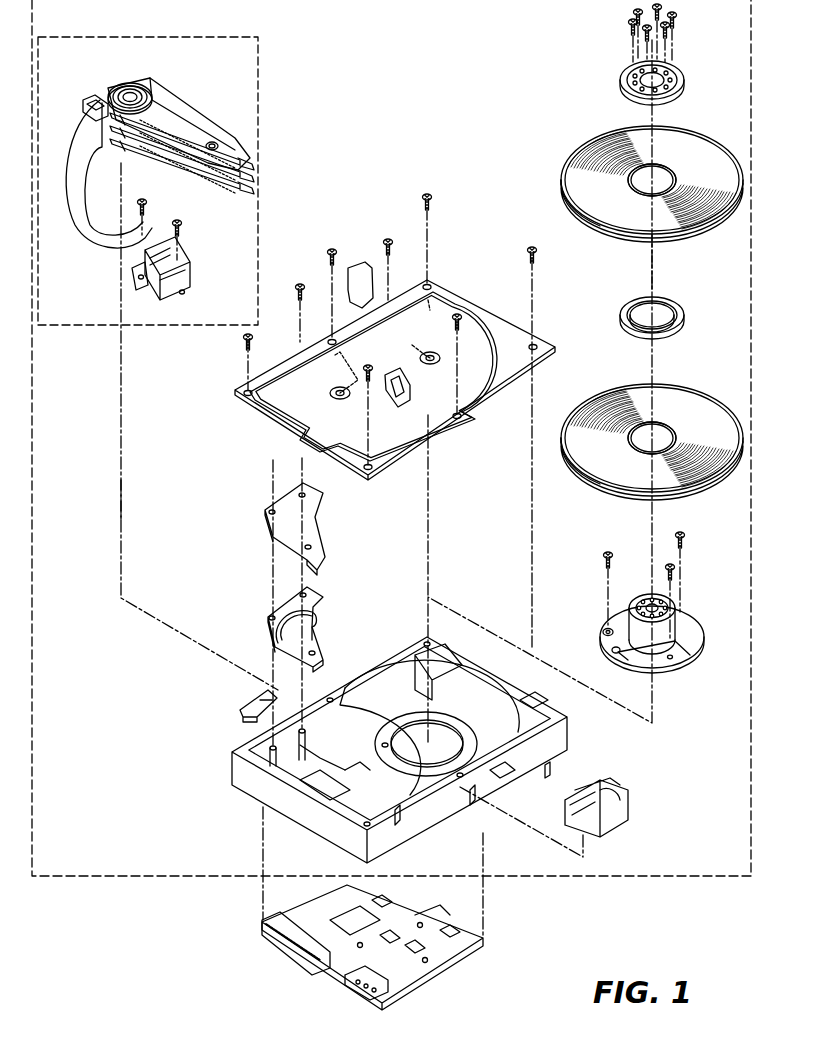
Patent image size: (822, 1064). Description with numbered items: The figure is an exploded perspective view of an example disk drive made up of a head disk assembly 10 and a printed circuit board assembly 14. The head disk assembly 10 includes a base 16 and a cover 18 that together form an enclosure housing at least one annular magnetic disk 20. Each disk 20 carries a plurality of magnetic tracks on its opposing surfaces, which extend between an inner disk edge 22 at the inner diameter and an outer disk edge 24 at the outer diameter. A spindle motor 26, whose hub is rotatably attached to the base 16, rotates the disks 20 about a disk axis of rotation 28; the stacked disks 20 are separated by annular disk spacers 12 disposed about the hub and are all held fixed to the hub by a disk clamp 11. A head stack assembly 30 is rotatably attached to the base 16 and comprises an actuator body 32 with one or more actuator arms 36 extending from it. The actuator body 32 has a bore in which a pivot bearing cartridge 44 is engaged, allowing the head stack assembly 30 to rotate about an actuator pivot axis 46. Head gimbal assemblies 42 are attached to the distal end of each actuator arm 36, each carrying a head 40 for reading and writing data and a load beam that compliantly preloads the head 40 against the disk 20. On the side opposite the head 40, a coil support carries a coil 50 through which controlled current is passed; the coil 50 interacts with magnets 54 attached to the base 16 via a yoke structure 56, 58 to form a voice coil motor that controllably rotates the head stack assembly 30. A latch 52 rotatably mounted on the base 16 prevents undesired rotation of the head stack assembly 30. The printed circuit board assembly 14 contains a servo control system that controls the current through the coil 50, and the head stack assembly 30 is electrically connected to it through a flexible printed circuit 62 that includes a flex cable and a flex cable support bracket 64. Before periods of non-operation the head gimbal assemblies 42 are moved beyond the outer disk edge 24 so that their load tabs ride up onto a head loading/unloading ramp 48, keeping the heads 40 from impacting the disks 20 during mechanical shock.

The head disk assembly 10 is at (572, 878).
The disk clamp 11 is at (680, 70).
The annular disk spacer 12 is at (620, 316).
The printed circuit board assembly 14 is at (460, 957).
The base 16 is at (515, 785).
The cover 18 is at (435, 283).
The annular magnetic disk 20 is at (705, 397).
The inner disk edge 22 is at (676, 439).
The outer disk edge 24 is at (588, 487).
The spindle motor 26 is at (690, 660).
The disk axis of rotation 28 is at (655, 258).
The head stack assembly 30 is at (70, 330).
The actuator body 32 is at (125, 83).
The actuator arm 36 is at (168, 108).
The head 40 is at (242, 183).
The head gimbal assembly 42 is at (226, 153).
The pivot bearing cartridge 44 is at (140, 84).
The actuator pivot axis 46 is at (120, 497).
The head loading/unloading ramp 48 is at (632, 795).
The coil 50 is at (95, 98).
The latch 52 is at (240, 712).
The magnet 54 is at (320, 614).
The yoke structure 56 is at (268, 622).
The yoke structure 58 is at (285, 528).
The flexible printed circuit 62 is at (92, 245).
The flex cable support bracket 64 is at (190, 290).